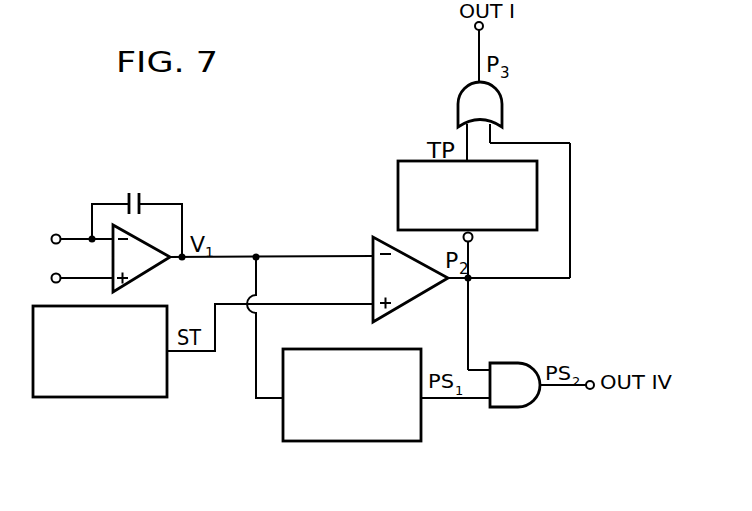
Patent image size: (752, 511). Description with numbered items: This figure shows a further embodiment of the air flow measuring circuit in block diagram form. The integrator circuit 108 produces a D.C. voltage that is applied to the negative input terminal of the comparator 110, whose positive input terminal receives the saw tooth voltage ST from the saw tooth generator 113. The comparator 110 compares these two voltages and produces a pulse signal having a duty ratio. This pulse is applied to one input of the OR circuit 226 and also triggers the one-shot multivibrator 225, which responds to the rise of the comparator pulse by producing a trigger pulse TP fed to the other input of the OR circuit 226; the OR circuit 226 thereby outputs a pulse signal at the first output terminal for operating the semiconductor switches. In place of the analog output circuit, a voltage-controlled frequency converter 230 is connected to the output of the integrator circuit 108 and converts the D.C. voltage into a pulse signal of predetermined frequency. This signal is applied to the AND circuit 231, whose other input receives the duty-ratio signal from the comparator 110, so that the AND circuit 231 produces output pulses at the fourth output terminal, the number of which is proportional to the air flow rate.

The integrator circuit 108 is at (136, 237).
The comparator 110 is at (373, 247).
The saw tooth generator 113 is at (112, 397).
The one-shot multivibrator 225 is at (398, 178).
The OR circuit 226 is at (459, 108).
The voltage-controlled frequency converter 230 is at (421, 423).
The AND circuit 231 is at (522, 407).